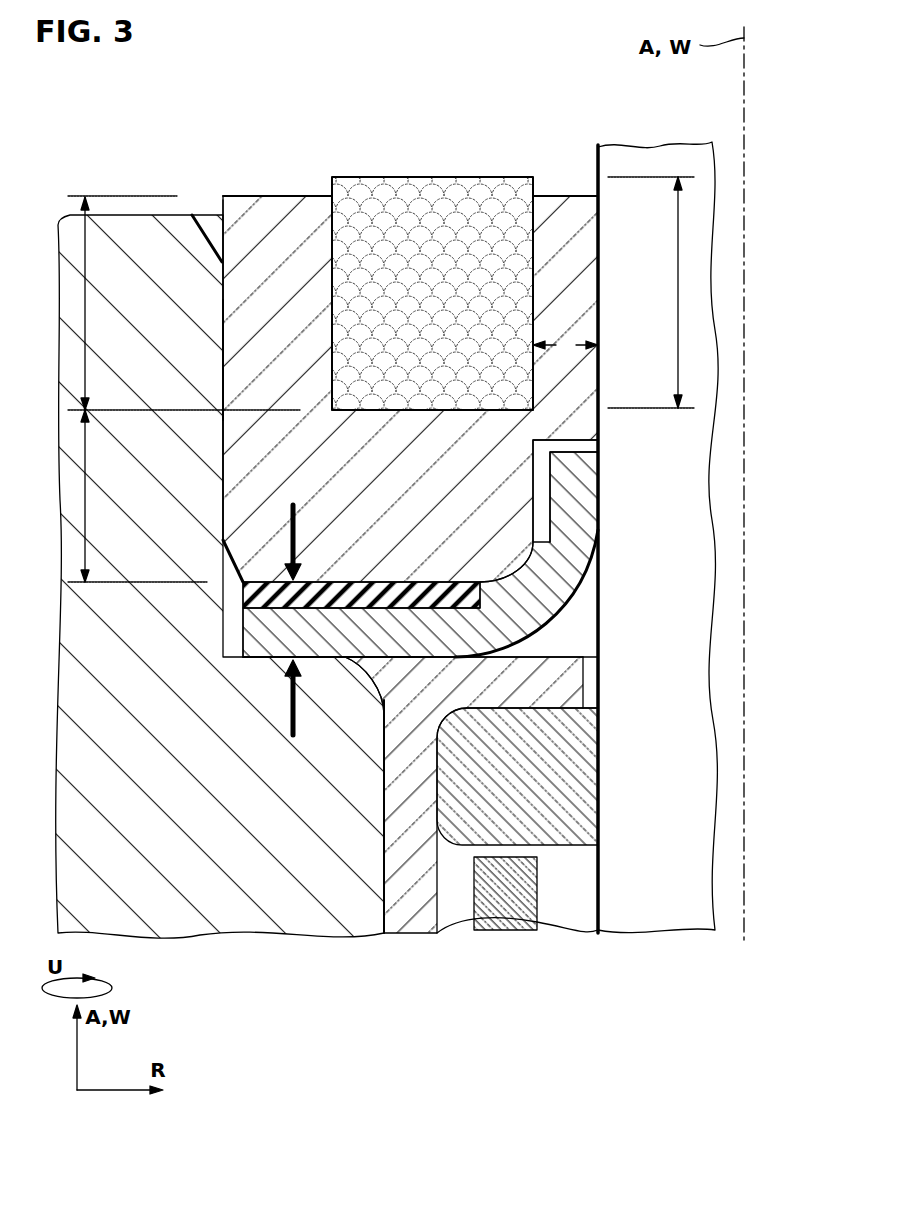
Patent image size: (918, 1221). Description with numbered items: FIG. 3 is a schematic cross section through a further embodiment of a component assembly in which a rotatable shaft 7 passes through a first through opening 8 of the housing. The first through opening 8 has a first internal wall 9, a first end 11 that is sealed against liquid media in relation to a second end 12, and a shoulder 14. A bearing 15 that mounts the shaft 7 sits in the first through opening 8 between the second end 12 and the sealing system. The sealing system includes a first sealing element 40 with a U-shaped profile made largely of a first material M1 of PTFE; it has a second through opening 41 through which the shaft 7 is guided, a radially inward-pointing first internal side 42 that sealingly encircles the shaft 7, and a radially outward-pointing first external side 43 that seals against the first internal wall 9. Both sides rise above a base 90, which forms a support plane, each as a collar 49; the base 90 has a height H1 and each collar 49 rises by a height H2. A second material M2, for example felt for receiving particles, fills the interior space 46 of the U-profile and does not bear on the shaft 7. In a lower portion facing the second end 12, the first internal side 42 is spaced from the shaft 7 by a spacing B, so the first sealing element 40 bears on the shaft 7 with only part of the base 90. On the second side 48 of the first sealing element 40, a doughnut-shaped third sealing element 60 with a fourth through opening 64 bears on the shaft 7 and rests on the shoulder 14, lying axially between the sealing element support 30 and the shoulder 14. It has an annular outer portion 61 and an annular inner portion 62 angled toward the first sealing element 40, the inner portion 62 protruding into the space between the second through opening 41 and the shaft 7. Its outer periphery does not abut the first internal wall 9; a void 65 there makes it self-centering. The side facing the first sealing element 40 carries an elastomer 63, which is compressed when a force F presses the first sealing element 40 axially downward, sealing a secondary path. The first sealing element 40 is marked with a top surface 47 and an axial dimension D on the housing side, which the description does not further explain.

The shaft 7 is at (660, 905).
The first through opening 8 is at (472, 715).
The first internal wall 9 is at (395, 712).
The first end 11 is at (211, 208).
The second end 12 is at (378, 947).
The shoulder 14 is at (283, 660).
The bearing 15 is at (565, 893).
The sealing element support 30 is at (248, 448).
The first sealing element 40 is at (312, 215).
The second through opening 41 is at (592, 188).
The first internal side 42 is at (600, 427).
The first external side 43 is at (222, 365).
The interior space 46 is at (432, 300).
The top surface 47 is at (240, 197).
The second side 48 is at (346, 660).
The collar 49 is at (280, 255).
The third sealing element 60 is at (268, 632).
The outer portion 61 is at (257, 660).
The inner portion 62 is at (598, 528).
The elastomer 63 is at (243, 597).
The fourth through opening 64 is at (585, 596).
The void 65 is at (232, 660).
The base 90 is at (443, 482).
The first material M1 is at (267, 200).
The second material M2 is at (372, 192).
The height of the base H1 is at (122, 303).
The height of the collar H2 is at (184, 496).
The depth D is at (651, 292).
The spacing B is at (565, 347).
The force F is at (290, 530).